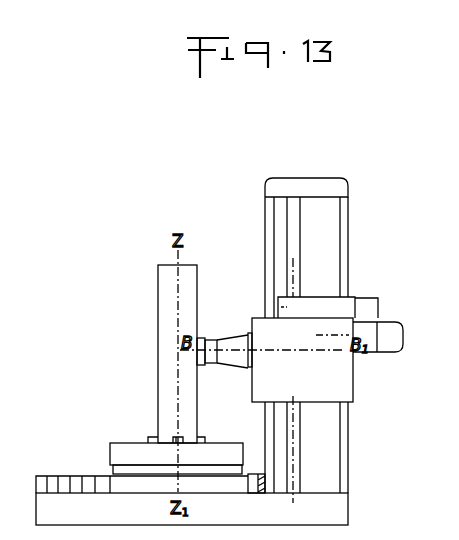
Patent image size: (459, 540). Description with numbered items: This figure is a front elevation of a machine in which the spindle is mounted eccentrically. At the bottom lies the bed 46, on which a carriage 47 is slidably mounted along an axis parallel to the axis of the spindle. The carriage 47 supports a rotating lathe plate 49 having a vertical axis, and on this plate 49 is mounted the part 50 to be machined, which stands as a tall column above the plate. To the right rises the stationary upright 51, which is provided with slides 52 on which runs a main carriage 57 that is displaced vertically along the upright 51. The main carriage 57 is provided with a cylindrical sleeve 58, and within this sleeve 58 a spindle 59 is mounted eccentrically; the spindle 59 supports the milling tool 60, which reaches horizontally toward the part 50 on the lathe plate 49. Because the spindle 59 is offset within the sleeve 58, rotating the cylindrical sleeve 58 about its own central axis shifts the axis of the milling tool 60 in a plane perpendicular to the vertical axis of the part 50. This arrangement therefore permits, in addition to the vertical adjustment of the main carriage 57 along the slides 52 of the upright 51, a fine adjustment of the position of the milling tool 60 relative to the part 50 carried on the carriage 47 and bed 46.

The bed 46 is at (192, 509).
The carriage 47 is at (150, 484).
The rotating lathe plate 49 is at (137, 453).
The part to be machined 50 is at (165, 286).
The stationary upright 51 is at (325, 422).
The slides 52 is at (340, 460).
The main carriage 57 is at (305, 333).
The cylindrical sleeve 58 is at (248, 371).
The spindle 59 is at (210, 360).
The milling tool 60 is at (199, 337).